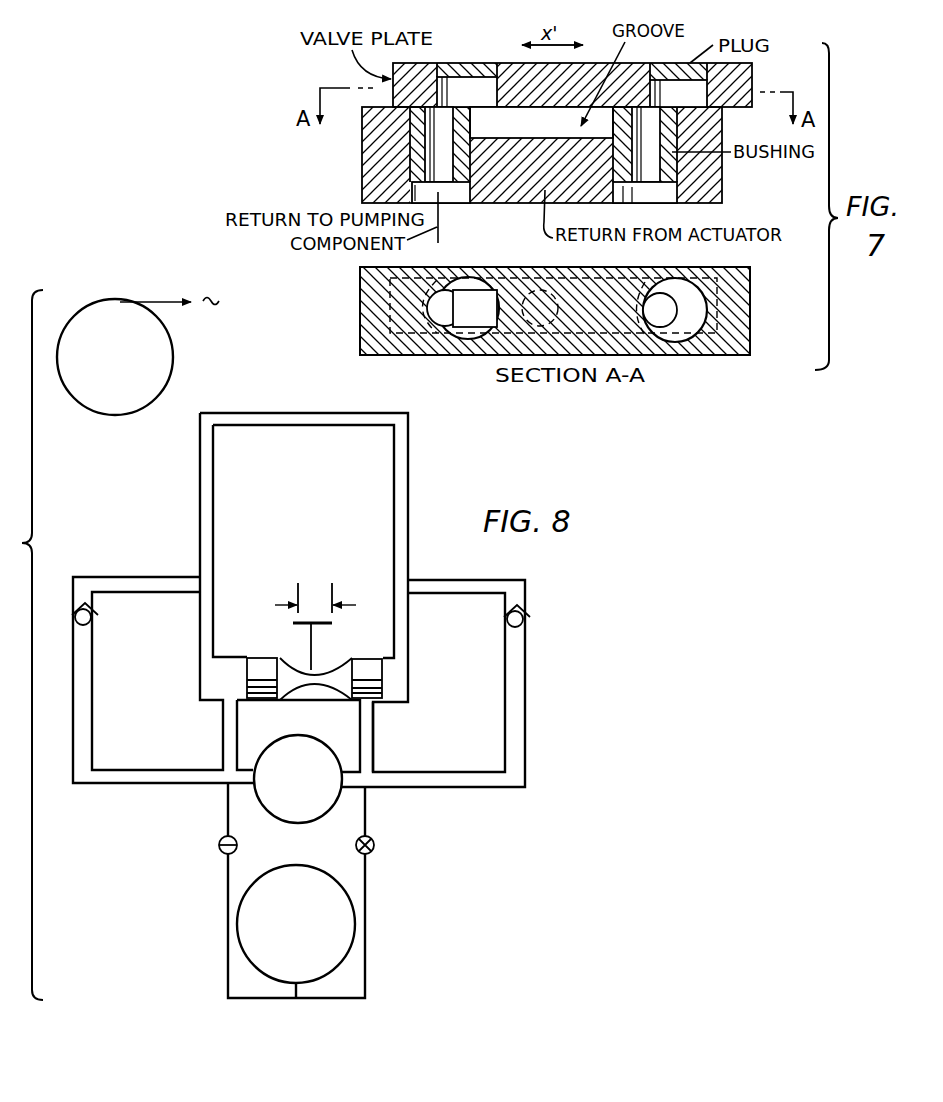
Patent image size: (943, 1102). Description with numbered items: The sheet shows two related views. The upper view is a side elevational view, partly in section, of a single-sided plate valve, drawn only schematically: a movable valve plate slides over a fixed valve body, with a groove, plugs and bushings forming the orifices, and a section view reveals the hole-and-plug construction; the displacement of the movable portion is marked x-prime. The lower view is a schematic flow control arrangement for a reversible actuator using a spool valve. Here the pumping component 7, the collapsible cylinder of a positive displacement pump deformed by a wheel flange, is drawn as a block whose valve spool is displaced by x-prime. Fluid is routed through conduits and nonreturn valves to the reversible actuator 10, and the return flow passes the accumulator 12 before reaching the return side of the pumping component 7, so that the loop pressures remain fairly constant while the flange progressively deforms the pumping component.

The pumping component 7 is at (301, 586).
The actuator 10 is at (311, 776).
The accumulator 12 is at (311, 925).